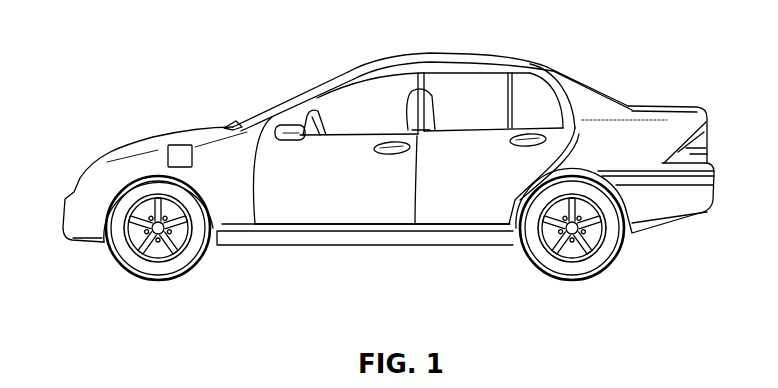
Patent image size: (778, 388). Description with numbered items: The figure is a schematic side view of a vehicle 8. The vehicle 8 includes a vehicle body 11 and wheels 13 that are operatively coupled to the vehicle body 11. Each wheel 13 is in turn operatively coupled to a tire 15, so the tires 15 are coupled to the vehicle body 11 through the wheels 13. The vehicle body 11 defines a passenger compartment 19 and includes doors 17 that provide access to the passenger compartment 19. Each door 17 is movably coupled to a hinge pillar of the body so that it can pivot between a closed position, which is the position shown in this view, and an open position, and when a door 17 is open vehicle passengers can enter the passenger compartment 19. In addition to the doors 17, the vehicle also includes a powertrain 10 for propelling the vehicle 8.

The vehicle 8 is at (381, 168).
The powertrain 10 is at (180, 143).
The vehicle body 11 is at (472, 54).
The wheel 13 is at (127, 247).
The tire 15 is at (165, 278).
The door 17 is at (350, 218).
The passenger compartment 19 is at (337, 103).